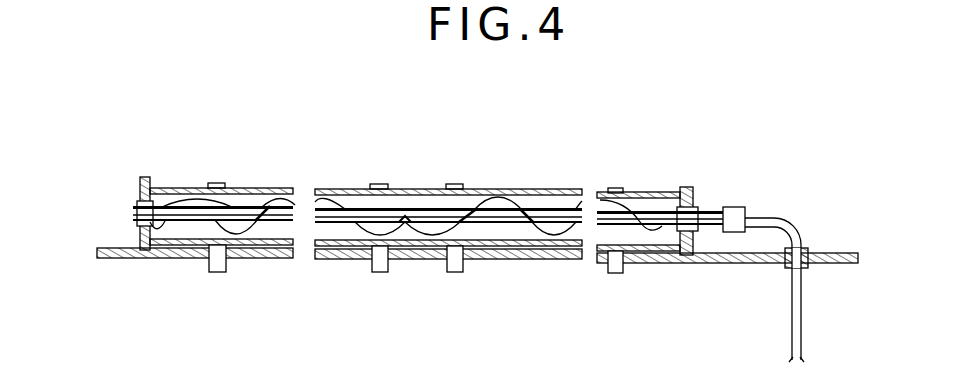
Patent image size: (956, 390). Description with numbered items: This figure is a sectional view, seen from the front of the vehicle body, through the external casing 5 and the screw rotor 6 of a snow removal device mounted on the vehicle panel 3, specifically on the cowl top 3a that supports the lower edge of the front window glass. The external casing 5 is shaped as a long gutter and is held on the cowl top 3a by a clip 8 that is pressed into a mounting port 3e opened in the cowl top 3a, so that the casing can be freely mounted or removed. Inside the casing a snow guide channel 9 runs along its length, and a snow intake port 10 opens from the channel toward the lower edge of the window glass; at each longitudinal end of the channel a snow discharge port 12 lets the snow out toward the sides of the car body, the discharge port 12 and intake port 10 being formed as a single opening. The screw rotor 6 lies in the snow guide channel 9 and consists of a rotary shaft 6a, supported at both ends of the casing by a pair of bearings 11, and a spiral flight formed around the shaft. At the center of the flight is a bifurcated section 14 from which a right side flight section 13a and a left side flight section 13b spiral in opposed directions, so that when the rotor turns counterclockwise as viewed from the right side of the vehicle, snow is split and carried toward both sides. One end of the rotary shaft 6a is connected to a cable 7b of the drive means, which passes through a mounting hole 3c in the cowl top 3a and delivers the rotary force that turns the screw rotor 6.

The vehicle panel 3 is at (477, 257).
The cowl top 3a is at (168, 259).
The mounting hole 3c is at (801, 250).
The mounting port 3e is at (214, 272).
The external casing 5 is at (420, 194).
The screw rotor 6 is at (428, 225).
The rotary shaft 6a is at (490, 223).
The cable 7b is at (776, 218).
The clip 8 is at (218, 183).
The snow guide channel 9 is at (463, 201).
The snow intake port 10 is at (406, 225).
The bearings 11 is at (141, 184).
The snow discharge port 12 is at (207, 203).
The right side flight section 13a is at (237, 227).
The left side flight section 13b is at (553, 228).
The bifurcated section 14 is at (407, 215).